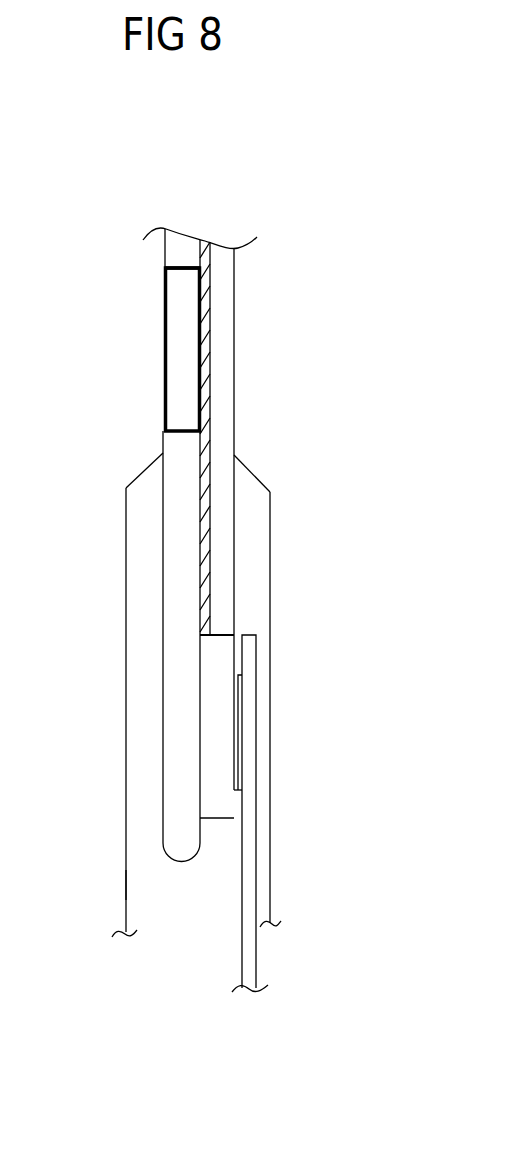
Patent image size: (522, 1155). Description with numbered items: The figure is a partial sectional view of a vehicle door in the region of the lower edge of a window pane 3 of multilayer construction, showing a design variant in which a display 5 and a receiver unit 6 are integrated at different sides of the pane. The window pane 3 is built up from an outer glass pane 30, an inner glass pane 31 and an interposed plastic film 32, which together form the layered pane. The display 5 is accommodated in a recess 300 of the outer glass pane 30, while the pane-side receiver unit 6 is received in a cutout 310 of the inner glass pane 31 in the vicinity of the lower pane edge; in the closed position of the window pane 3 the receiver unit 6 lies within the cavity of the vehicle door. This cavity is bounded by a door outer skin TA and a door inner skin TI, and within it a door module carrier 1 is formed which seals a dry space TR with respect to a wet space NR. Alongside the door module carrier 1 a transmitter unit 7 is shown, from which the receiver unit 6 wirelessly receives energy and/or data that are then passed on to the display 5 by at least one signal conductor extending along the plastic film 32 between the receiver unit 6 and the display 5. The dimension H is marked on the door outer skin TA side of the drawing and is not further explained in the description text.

The window pane 3 is at (152, 212).
The recess 300 is at (170, 268).
The display 5 is at (178, 345).
The plastic film 32 is at (205, 305).
The inner glass pane 31 is at (238, 359).
The outer glass pane 30 is at (183, 488).
The door inner skin TI is at (272, 538).
The wet space NR is at (137, 580).
The cutout 310 is at (235, 633).
The door outer skin TA is at (124, 697).
The receiver unit 6 is at (214, 675).
The transmitter unit 7 is at (237, 727).
The dry space TR is at (263, 773).
The door module carrier 1 is at (243, 852).
The height H is at (128, 889).